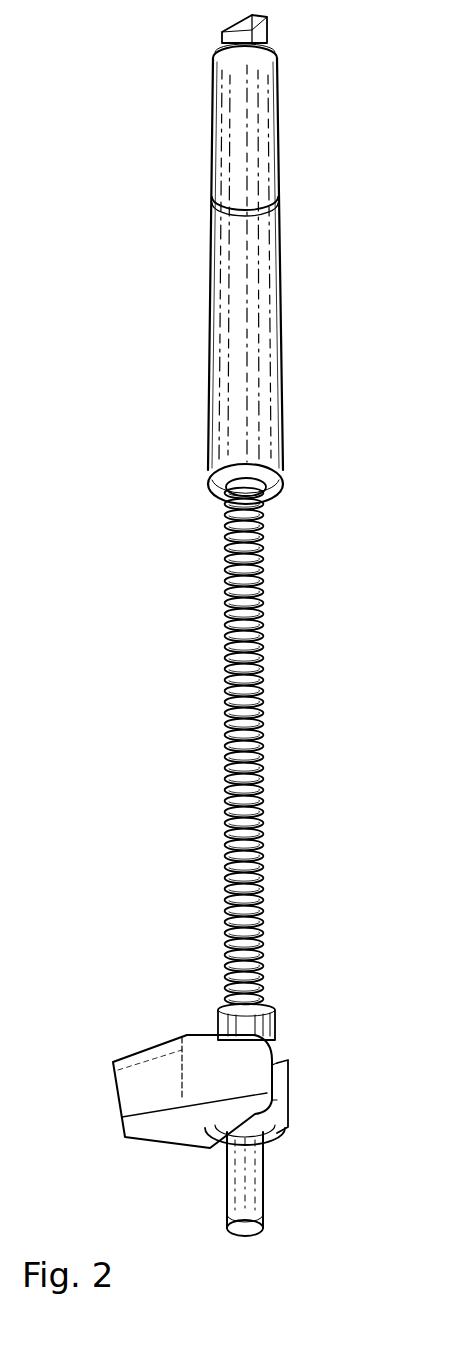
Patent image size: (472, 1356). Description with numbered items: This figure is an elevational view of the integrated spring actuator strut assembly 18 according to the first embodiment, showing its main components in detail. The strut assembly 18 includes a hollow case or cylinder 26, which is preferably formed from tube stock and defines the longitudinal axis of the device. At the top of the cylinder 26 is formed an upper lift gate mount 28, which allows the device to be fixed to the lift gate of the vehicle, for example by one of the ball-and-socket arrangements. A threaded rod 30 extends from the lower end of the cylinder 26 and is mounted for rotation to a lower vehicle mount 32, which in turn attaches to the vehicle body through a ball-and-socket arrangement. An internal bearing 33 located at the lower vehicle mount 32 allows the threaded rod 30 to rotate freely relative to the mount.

The strut assembly 18 is at (311, 274).
The hollow case or cylinder 26 is at (280, 390).
The upper lift gate mount 28 is at (265, 23).
The threaded rod 30 is at (265, 567).
The lower vehicle mount 32 is at (153, 1048).
The internal bearing 33 is at (277, 1030).